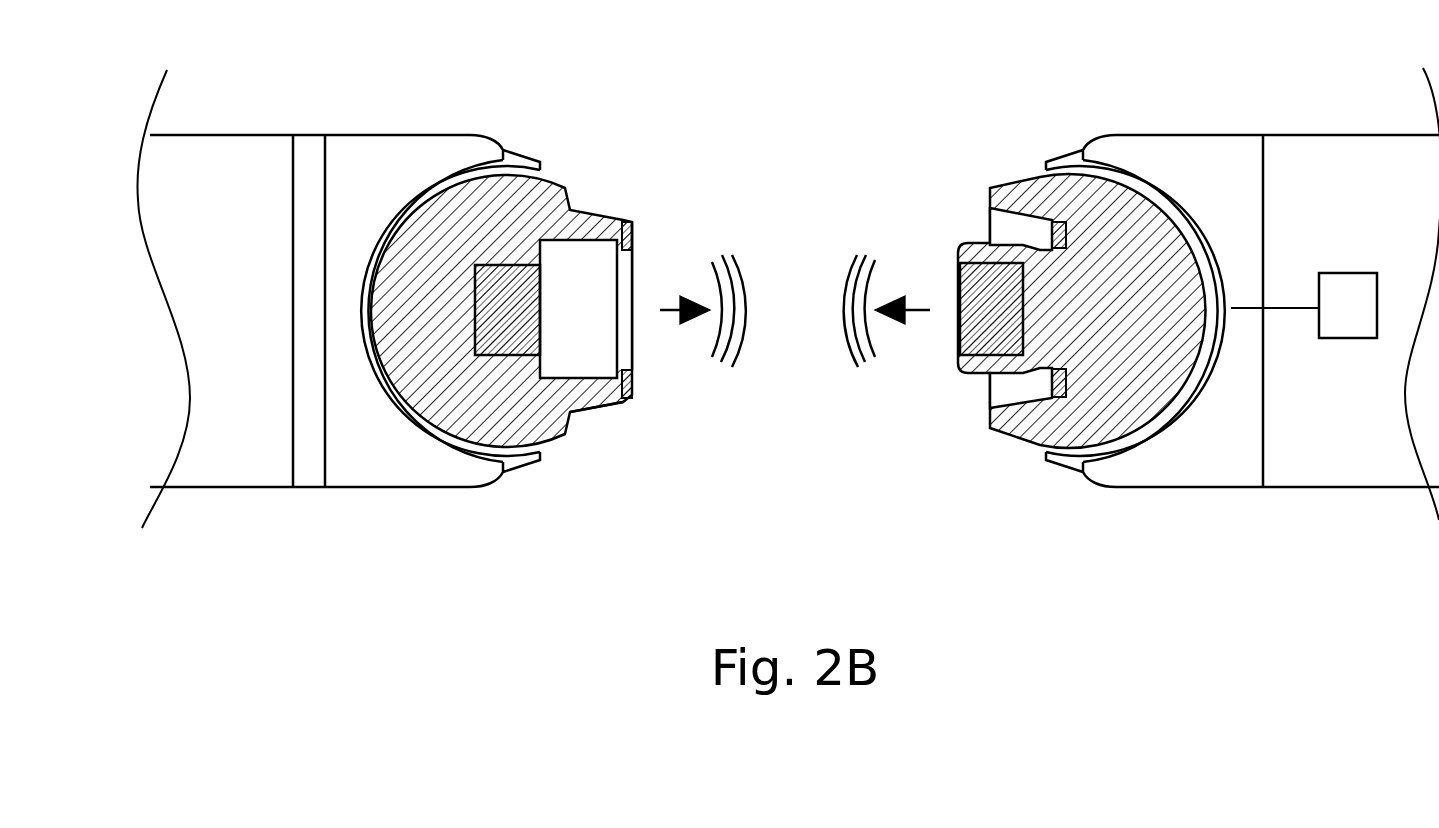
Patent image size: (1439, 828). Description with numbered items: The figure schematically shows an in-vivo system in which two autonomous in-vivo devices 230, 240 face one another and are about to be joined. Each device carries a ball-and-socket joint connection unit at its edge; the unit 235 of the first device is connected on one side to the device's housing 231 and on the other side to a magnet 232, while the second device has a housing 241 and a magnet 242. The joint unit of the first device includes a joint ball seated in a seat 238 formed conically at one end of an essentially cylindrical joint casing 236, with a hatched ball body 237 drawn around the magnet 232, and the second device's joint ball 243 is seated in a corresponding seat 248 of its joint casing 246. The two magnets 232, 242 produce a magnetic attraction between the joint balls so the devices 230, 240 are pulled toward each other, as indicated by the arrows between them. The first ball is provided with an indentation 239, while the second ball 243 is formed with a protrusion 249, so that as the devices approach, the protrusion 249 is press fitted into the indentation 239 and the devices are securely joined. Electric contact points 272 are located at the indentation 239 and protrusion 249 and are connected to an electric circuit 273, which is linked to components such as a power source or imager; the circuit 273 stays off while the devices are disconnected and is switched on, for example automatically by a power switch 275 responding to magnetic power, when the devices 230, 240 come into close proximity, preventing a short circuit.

The autonomous in-vivo device 230 is at (275, 550).
The housing 231 is at (292, 175).
The magnet 232 is at (540, 280).
The ball-and-socket joint connection unit 235 is at (577, 422).
The joint casing 236 is at (395, 465).
The diaphragm body 237 is at (578, 205).
The seat 238 is at (517, 160).
The indentation 239 is at (633, 218).
The autonomous in-vivo device 240 is at (1338, 542).
The housing 241 is at (1291, 152).
The magnet 242 is at (957, 290).
The joint ball 243 is at (1100, 190).
The joint casing 246 is at (1185, 477).
The seat 248 is at (1062, 160).
The protrusion 249 is at (1003, 228).
The electric contact points 272 is at (635, 250).
The electric circuit 273 is at (325, 426).
The power switch 275 is at (1344, 328).